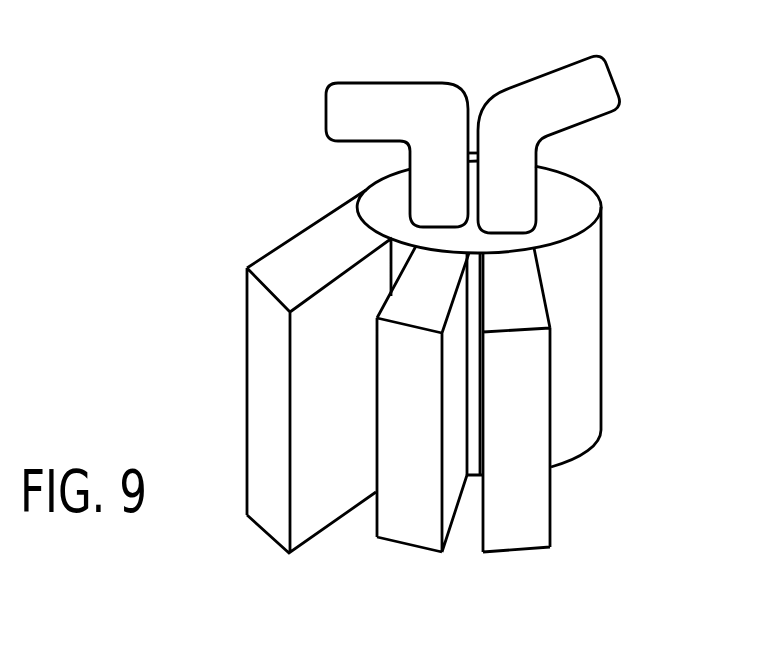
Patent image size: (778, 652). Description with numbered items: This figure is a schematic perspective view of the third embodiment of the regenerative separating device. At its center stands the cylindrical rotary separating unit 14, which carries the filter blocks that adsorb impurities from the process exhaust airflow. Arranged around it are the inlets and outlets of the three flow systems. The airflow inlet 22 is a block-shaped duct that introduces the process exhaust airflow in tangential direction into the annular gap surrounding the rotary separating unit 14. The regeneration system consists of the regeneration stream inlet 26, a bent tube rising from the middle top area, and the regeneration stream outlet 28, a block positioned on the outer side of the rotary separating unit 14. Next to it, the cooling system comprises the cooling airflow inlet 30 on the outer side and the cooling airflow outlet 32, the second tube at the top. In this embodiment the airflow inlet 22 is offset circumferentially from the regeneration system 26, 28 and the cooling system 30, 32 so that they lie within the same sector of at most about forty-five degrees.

The rotary separating unit 14 is at (622, 314).
The airflow inlet 22 is at (292, 251).
The regeneration stream inlet 26 is at (605, 105).
The regeneration stream outlet 28 is at (522, 539).
The cooling airflow inlet 30 is at (413, 528).
The cooling airflow outlet 32 is at (339, 108).